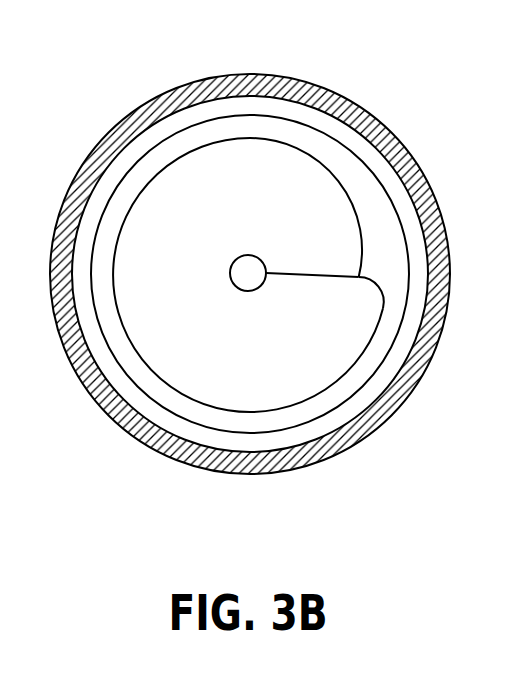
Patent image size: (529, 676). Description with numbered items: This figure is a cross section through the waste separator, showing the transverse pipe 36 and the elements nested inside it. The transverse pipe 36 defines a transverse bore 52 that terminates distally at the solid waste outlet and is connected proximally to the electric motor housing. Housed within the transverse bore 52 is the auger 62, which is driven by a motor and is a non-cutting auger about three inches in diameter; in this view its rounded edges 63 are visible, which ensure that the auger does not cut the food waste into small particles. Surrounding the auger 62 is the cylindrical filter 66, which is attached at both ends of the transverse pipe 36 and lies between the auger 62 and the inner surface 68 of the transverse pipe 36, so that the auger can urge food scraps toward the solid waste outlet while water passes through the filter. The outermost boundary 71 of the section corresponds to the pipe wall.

The transverse pipe 36 is at (418, 170).
The transverse bore 52 is at (378, 270).
The auger 62 is at (155, 217).
The rounded edges 63 is at (392, 297).
The cylindrical filter 66 is at (249, 114).
The inner surface 68 is at (360, 122).
The wall inner surface 71 is at (423, 372).